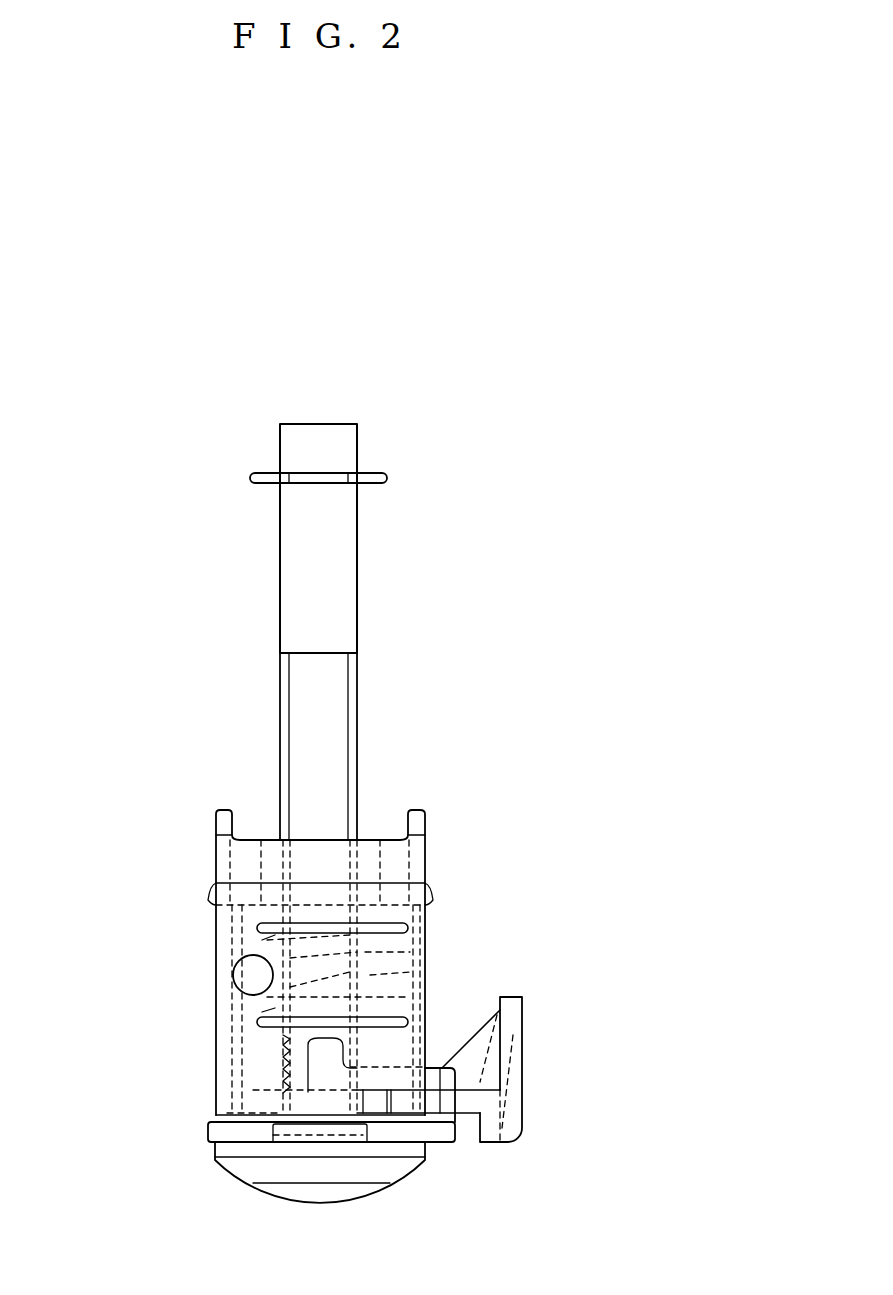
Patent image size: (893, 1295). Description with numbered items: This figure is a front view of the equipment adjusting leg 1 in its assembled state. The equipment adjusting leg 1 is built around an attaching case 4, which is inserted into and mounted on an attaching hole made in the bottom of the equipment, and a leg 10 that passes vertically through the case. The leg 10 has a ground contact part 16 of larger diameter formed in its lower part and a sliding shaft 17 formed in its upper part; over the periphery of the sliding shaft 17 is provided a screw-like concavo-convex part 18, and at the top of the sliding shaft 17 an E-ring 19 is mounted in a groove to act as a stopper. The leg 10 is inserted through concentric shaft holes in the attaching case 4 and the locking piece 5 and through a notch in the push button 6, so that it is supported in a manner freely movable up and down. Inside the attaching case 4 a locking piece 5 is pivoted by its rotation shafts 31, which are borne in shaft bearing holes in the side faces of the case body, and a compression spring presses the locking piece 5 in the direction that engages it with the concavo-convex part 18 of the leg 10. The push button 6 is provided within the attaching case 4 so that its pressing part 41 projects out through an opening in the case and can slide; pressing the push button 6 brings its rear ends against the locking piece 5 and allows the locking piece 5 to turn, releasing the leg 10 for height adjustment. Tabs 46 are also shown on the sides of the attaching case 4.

The equipment adjusting leg 1 is at (103, 498).
The attaching case 4 is at (448, 848).
The locking piece 5 is at (240, 1077).
The push button 6 is at (545, 1005).
The leg 10 is at (402, 572).
The ground contact part 16 is at (420, 1187).
The sliding shaft 17 is at (357, 678).
The concavo-convex part 18 is at (347, 722).
The E-ring 19 is at (387, 476).
The rotation shaft 31 is at (240, 980).
The pressing part 41 is at (522, 1080).
The engagement tabs 46 is at (215, 893).